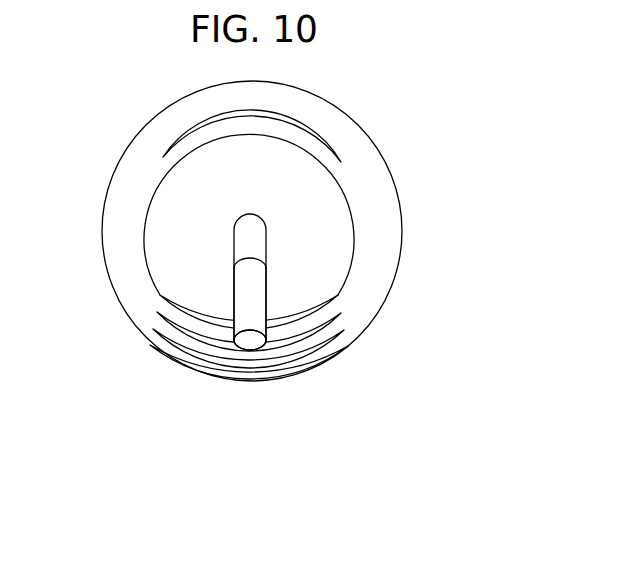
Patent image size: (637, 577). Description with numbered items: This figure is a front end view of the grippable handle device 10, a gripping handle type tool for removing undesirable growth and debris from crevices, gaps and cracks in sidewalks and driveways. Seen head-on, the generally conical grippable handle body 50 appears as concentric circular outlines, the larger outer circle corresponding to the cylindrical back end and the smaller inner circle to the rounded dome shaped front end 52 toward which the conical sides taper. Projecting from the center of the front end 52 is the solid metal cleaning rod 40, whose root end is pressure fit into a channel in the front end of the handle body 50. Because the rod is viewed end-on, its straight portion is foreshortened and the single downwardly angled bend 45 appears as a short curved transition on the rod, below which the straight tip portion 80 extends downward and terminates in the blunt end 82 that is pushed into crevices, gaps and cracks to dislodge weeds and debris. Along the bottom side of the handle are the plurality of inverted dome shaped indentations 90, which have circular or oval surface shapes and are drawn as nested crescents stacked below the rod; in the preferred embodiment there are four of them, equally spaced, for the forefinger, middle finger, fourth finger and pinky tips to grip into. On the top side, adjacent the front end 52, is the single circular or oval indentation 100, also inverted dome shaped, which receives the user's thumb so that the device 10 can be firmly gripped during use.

The gripping handle type tool 10 is at (462, 90).
The solid metal cleaning rod 40 is at (358, 262).
The single downwardly angled bend 45 is at (358, 291).
The grippable handle body 50 is at (293, 231).
The rounded dome shaped front end 52 is at (184, 225).
The straight tip portion 80 is at (319, 388).
The blunt end 82 is at (207, 401).
The plurality of inverted dome shaped indentations 90 is at (220, 370).
The single circular or oval indentation 100 is at (199, 102).